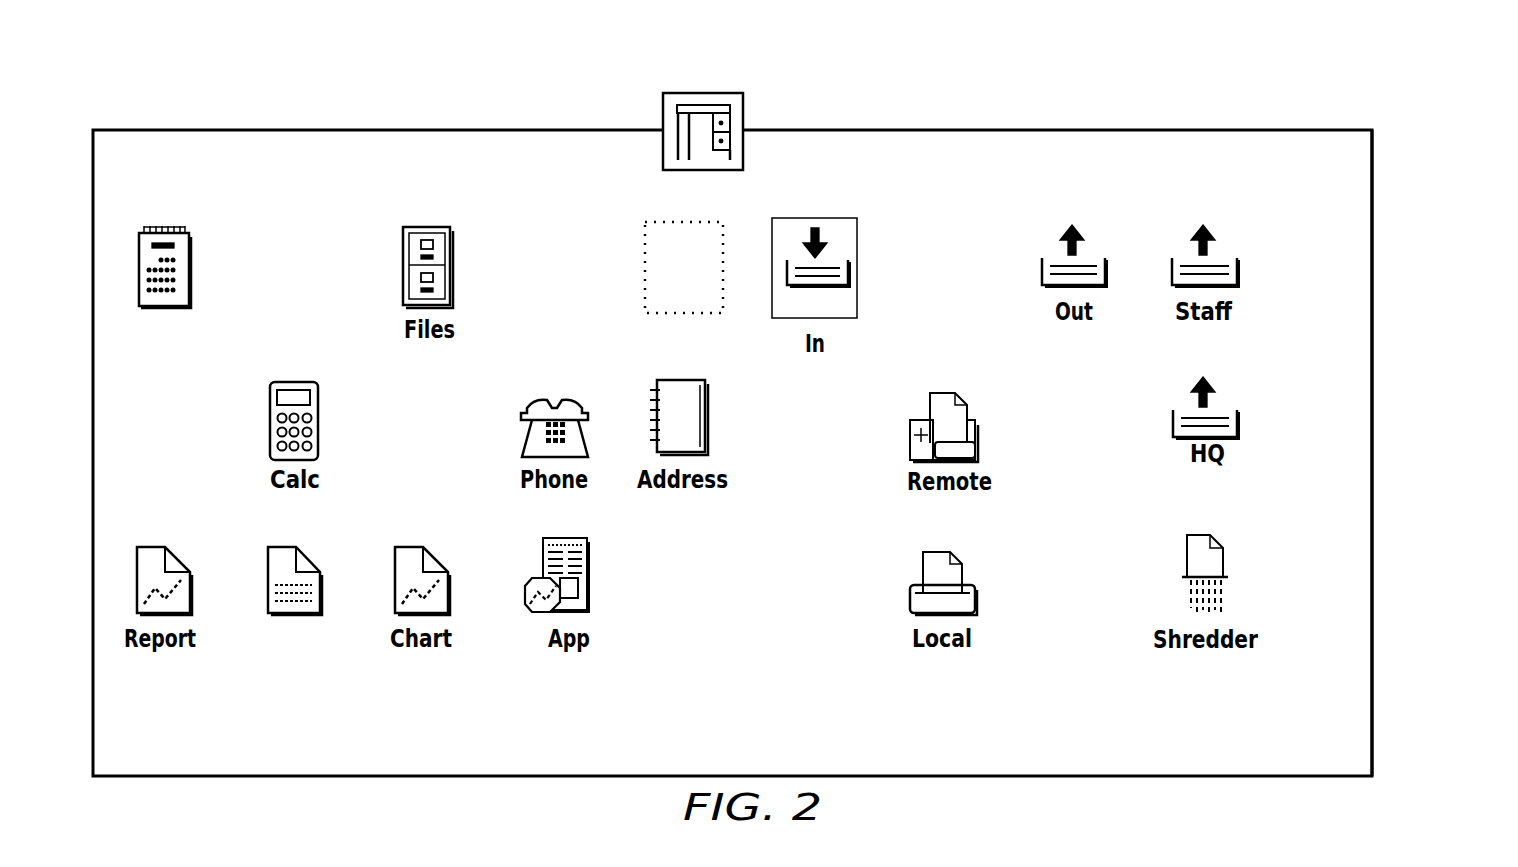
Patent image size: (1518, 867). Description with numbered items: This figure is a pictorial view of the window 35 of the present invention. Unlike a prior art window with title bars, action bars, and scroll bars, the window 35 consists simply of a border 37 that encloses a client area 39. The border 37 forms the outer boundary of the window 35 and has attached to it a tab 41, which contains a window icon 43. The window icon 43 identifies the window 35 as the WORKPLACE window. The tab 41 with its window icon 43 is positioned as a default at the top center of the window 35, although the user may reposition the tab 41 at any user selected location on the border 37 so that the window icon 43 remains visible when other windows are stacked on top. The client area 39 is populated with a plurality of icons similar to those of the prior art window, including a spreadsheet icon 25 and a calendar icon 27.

The spreadsheet icon 25 is at (300, 557).
The calendar icon 27 is at (192, 265).
The window 35 is at (1440, 201).
The border 37 is at (1373, 404).
The client area 39 is at (781, 612).
The tab 41 is at (746, 98).
The window icon 43 is at (697, 105).